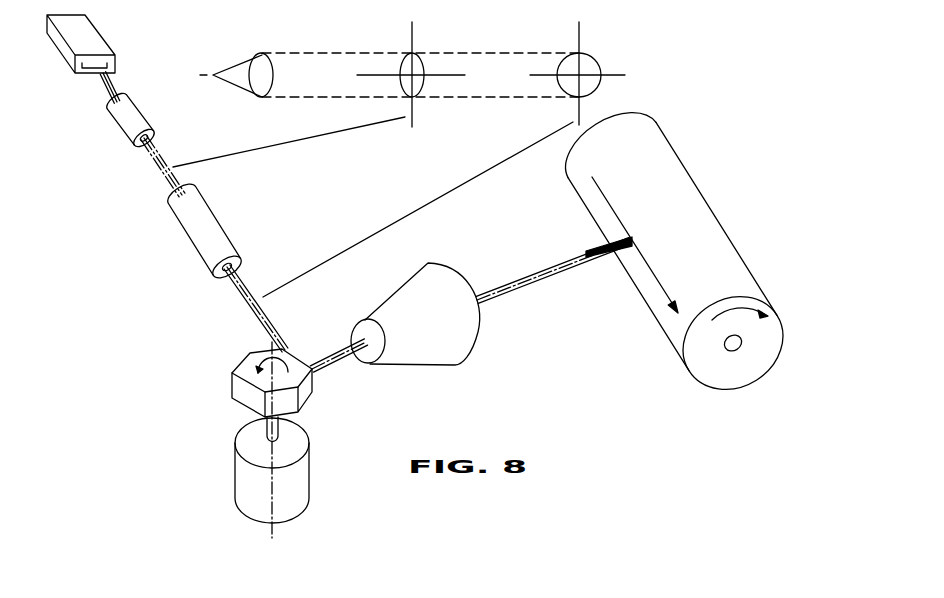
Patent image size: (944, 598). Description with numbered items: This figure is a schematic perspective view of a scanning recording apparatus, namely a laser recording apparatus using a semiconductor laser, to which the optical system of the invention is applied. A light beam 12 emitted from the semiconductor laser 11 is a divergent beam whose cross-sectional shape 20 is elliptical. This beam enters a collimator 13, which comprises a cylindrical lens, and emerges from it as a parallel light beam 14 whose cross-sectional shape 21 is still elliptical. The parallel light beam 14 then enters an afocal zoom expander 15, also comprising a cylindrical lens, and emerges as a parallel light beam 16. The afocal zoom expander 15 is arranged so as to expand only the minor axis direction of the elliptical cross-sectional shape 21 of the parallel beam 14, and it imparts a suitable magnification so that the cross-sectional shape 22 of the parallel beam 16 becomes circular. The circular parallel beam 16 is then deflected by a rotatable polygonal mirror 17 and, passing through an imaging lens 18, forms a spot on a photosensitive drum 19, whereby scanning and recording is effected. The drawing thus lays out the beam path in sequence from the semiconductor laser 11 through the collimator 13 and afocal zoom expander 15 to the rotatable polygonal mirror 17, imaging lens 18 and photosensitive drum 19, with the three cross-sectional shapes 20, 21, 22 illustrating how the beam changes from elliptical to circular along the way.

The semiconductor laser 11 is at (102, 38).
The light beam 12 is at (108, 88).
The collimator 13 is at (125, 128).
The parallel light beam 14 is at (158, 172).
The afocal zoom expander 15 is at (220, 230).
The parallel light beam 16 is at (248, 312).
The rotatable polygonal mirror 17 is at (305, 395).
The imaging lens 18 is at (428, 360).
The photosensitive drum 19 is at (657, 322).
The cross-sectional shape 20 is at (262, 53).
The cross-sectional shape 21 is at (414, 54).
The cross-sectional shape 22 is at (584, 54).